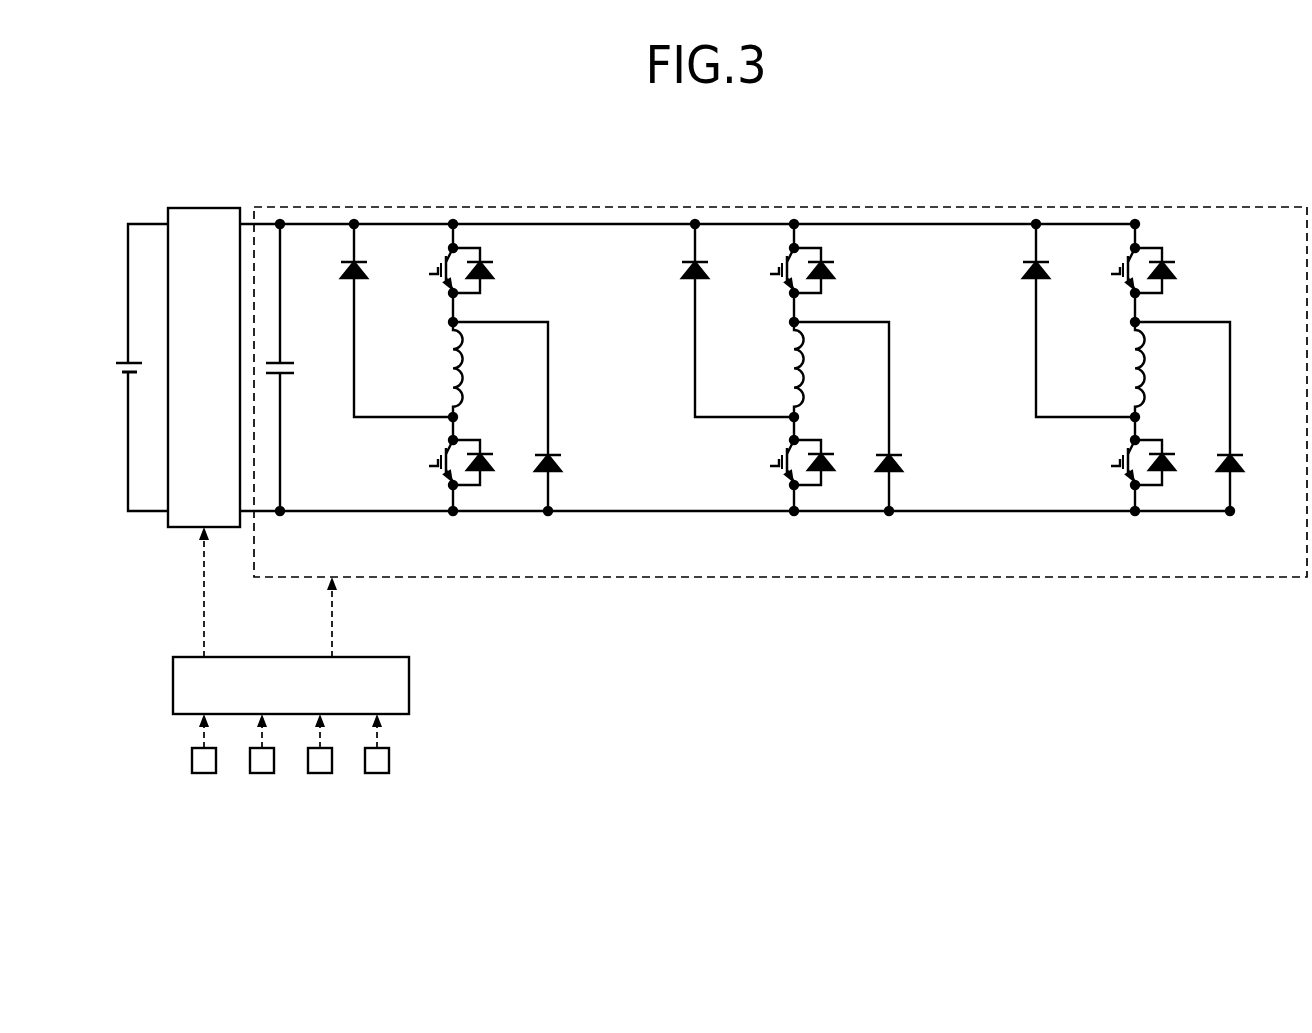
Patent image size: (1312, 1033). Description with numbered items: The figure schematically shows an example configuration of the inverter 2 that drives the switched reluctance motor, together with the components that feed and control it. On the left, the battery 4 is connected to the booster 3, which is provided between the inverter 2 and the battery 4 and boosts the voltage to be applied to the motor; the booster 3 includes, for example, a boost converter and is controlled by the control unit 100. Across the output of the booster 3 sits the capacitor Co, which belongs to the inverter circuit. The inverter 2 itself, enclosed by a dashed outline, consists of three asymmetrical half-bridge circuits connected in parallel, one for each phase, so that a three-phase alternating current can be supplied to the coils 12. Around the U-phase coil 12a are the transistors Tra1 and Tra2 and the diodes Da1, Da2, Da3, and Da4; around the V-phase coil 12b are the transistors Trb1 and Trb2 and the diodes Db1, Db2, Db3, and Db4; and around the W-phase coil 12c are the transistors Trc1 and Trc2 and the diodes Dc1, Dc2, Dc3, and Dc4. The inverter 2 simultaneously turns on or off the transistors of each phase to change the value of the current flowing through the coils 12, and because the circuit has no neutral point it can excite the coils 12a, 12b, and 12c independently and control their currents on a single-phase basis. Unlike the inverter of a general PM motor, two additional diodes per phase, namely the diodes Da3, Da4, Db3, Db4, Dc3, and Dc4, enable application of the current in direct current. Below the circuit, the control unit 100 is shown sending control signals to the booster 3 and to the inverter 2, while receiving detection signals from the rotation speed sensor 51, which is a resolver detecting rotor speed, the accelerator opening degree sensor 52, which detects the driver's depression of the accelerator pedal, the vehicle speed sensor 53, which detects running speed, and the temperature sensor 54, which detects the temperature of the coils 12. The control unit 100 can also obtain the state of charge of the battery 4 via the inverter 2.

The inverter 2 is at (1268, 207).
The booster 3 is at (204, 339).
The battery 4 is at (130, 367).
The capacitor Co is at (296, 367).
The coils 12 is at (825, 379).
The U-phase coil 12a is at (483, 379).
The V-phase coil 12b is at (824, 379).
The W-phase coil 12c is at (1165, 379).
The transistor Tra1 is at (425, 244).
The transistor Tra2 is at (389, 475).
The diode Da1 is at (499, 212).
The diode Da2 is at (471, 537).
The diode Da3 is at (376, 285).
The diode Da4 is at (524, 474).
The transistor Trb1 is at (765, 244).
The transistor Trb2 is at (729, 475).
The diode Db1 is at (840, 212).
The diode Db2 is at (812, 537).
The diode Db3 is at (717, 285).
The diode Db4 is at (865, 474).
The transistor Trc1 is at (1108, 244).
The transistor Trc2 is at (1071, 475).
The diode Dc1 is at (1181, 212).
The diode Dc2 is at (1154, 537).
The diode Dc3 is at (1056, 291).
The diode Dc4 is at (1207, 478).
The control unit 100 is at (327, 620).
The rotation speed sensor 51 is at (203, 772).
The accelerator opening degree sensor 52 is at (261, 772).
The vehicle speed sensor 53 is at (319, 772).
The temperature sensor 54 is at (376, 772).